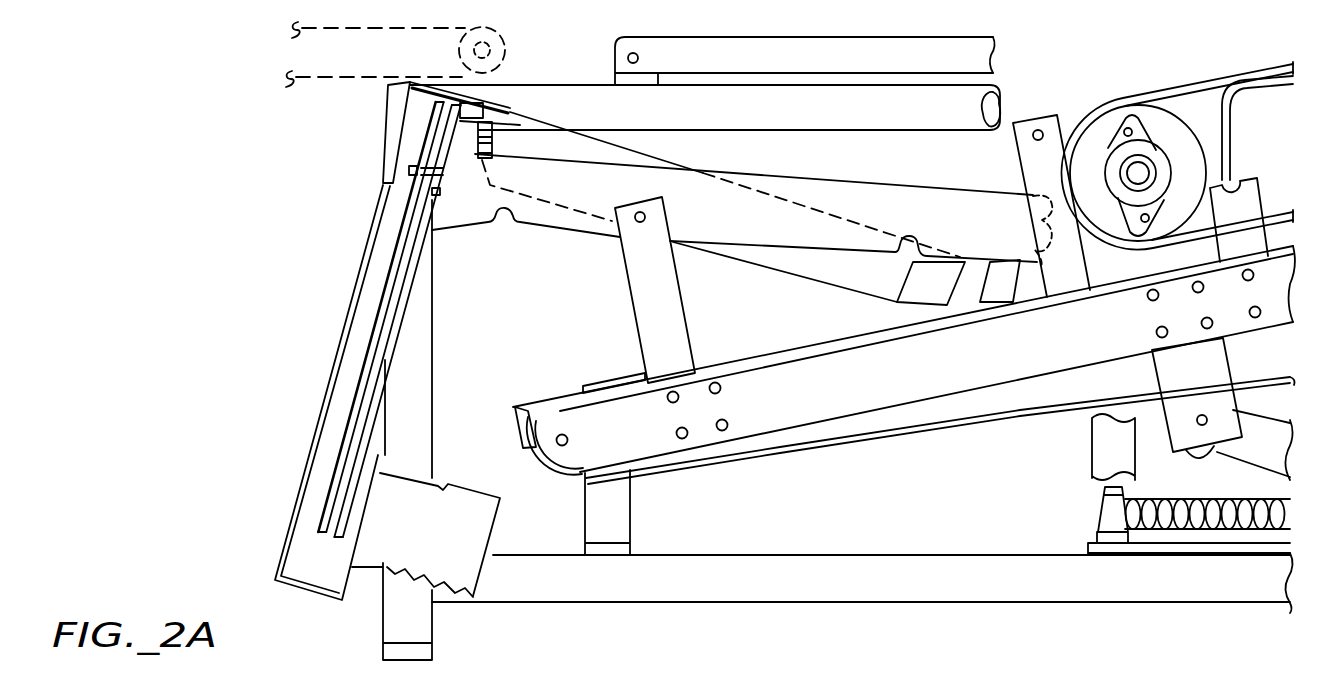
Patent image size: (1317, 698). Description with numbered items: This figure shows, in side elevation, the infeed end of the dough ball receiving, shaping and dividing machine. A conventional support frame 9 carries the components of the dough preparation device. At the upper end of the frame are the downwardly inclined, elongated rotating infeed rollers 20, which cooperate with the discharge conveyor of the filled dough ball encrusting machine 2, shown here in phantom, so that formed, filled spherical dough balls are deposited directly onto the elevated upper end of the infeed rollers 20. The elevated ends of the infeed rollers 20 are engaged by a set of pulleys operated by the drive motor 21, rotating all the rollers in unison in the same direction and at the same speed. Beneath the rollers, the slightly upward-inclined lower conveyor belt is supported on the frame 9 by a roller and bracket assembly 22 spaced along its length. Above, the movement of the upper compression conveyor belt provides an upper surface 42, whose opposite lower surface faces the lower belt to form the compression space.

The dough-forming means 2 is at (457, 26).
The frame 9 is at (893, 588).
The infeed rollers 20 is at (830, 274).
The drive motor 21 is at (483, 527).
The roller and bracket assembly 22 is at (697, 433).
The upper surface 42 is at (1183, 90).